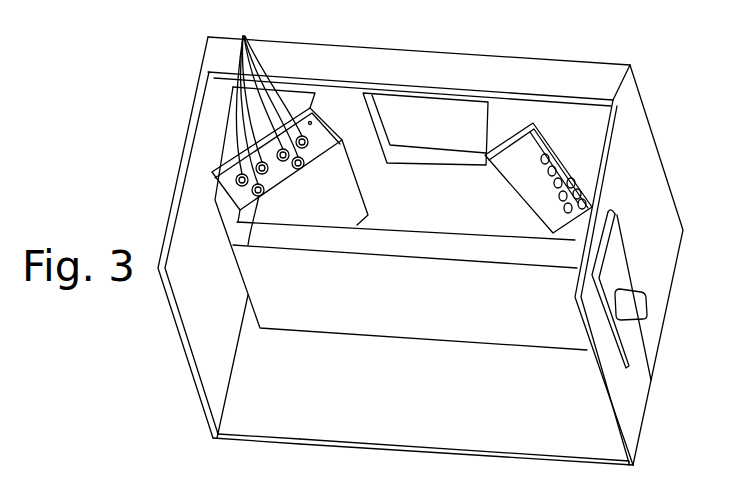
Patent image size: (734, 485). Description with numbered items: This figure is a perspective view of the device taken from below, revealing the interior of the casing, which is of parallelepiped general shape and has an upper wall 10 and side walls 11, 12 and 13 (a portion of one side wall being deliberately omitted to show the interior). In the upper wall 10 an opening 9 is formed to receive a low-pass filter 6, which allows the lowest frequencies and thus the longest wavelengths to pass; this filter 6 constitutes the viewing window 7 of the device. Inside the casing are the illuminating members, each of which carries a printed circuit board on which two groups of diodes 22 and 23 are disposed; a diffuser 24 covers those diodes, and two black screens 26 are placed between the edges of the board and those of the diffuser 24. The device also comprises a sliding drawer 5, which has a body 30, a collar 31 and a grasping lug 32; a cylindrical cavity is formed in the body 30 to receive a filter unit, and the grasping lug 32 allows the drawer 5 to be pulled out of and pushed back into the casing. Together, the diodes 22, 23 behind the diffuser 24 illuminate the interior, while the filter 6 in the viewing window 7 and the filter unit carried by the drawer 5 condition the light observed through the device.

The sliding drawer 5 is at (466, 384).
The low-pass filter 6 is at (430, 103).
The viewing window 7 is at (466, 462).
The opening 9 is at (367, 118).
The upper wall 10 is at (557, 73).
The side wall 11 is at (183, 332).
The side wall 12 is at (245, 430).
The side wall 13 is at (630, 420).
The diodes 22 is at (253, 31).
The diodes 23 is at (262, 196).
The diffuser 24 is at (342, 208).
The black screens 26 is at (330, 112).
The body 30 is at (385, 333).
The collar 31 is at (620, 248).
The grasping lug 32 is at (640, 313).